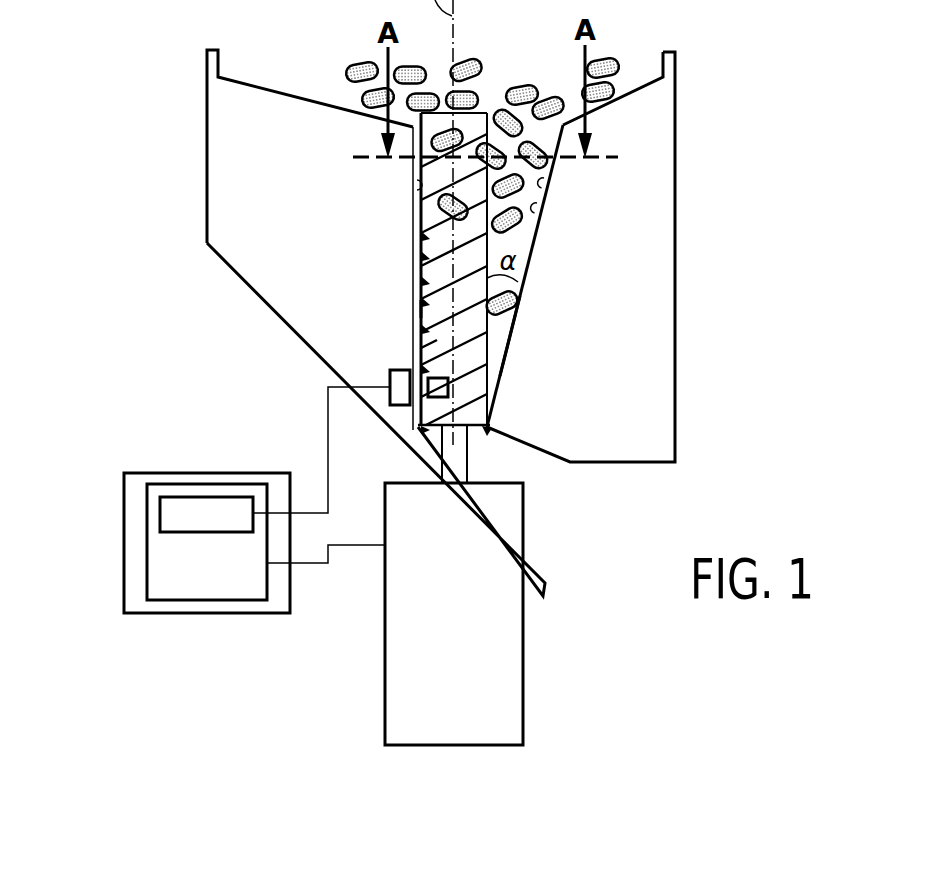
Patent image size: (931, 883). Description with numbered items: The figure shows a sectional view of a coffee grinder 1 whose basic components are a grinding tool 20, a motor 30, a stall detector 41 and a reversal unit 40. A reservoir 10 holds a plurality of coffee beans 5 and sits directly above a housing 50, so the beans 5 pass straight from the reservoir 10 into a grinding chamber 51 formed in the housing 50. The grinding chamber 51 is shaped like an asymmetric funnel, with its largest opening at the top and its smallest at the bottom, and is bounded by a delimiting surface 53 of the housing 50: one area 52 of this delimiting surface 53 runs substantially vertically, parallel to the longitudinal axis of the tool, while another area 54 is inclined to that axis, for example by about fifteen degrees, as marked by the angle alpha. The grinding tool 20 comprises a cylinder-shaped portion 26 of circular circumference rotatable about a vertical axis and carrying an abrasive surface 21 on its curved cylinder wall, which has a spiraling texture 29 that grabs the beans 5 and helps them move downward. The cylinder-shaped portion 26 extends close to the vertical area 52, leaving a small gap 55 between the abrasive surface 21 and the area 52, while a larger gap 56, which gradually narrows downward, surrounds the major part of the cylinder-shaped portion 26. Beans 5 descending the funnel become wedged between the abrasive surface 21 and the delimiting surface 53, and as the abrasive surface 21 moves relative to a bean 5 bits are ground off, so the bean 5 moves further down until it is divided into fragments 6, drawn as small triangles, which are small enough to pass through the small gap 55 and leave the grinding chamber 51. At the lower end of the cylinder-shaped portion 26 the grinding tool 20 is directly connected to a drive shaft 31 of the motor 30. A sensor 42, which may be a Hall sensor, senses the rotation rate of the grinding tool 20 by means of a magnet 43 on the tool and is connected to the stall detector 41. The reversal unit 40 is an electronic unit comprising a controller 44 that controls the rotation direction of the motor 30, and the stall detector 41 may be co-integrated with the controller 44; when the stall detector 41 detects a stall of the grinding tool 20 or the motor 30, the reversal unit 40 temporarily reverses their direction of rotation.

The coffee grinder 1 is at (748, 88).
The reservoir 10 is at (283, 88).
The housing 50 is at (662, 162).
The grinding chamber 51 is at (417, 210).
The vertical area 52 is at (416, 184).
The delimiting surface 53 is at (542, 182).
The inclined area 54 is at (533, 207).
The spiraling texture 29 is at (523, 245).
The larger gap 56 is at (525, 252).
The fragments 6 is at (423, 244).
The small gap 55 is at (412, 315).
The cylinder-shaped portion 26 is at (437, 345).
The coffee beans 5 is at (515, 302).
The abrasive surface 21 is at (488, 353).
The grinding tool 20 is at (473, 372).
The sensor 42 is at (393, 405).
The magnet 43 is at (430, 398).
The drive shaft 31 is at (462, 458).
The motor 30 is at (385, 652).
The reversal unit 40 is at (124, 479).
The stall detector 41 is at (160, 515).
The controller 44 is at (147, 568).